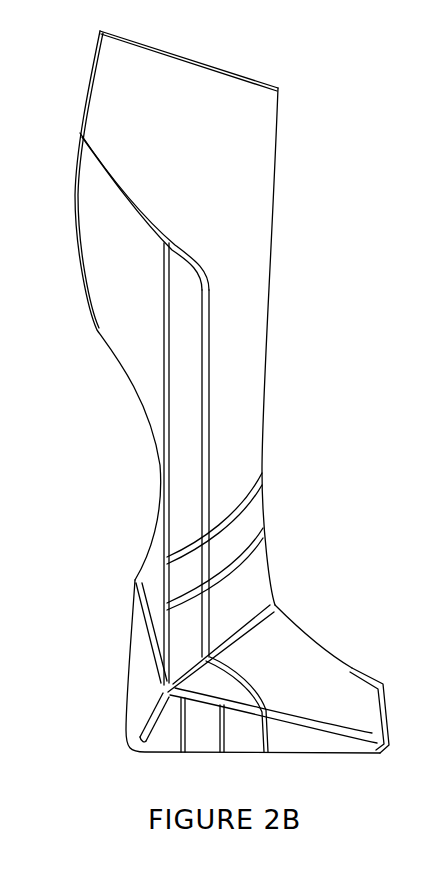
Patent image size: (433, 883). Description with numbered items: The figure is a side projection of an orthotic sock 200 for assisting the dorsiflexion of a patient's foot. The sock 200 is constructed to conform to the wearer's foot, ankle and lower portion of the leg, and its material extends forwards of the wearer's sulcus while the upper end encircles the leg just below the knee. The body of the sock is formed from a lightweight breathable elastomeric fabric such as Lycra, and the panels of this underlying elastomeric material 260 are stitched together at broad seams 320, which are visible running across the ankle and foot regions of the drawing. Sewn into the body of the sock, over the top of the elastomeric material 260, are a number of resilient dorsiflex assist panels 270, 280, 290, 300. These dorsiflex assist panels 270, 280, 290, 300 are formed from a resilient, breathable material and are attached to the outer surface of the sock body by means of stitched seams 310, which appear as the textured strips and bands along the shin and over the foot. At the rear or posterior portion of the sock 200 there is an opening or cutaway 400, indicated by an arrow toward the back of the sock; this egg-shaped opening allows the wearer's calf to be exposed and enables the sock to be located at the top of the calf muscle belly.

The sock 200 is at (289, 82).
The elastomeric material 260 is at (110, 272).
The dorsiflex assist panel 270 is at (244, 381).
The dorsiflex assist panel 280 is at (177, 492).
The dorsiflex assist panel 290 is at (250, 523).
The dorsiflex assist panel 300 is at (322, 663).
The stitched seams 310 is at (211, 334).
The broad seams 320 is at (276, 608).
The opening or cutaway 400 is at (121, 449).